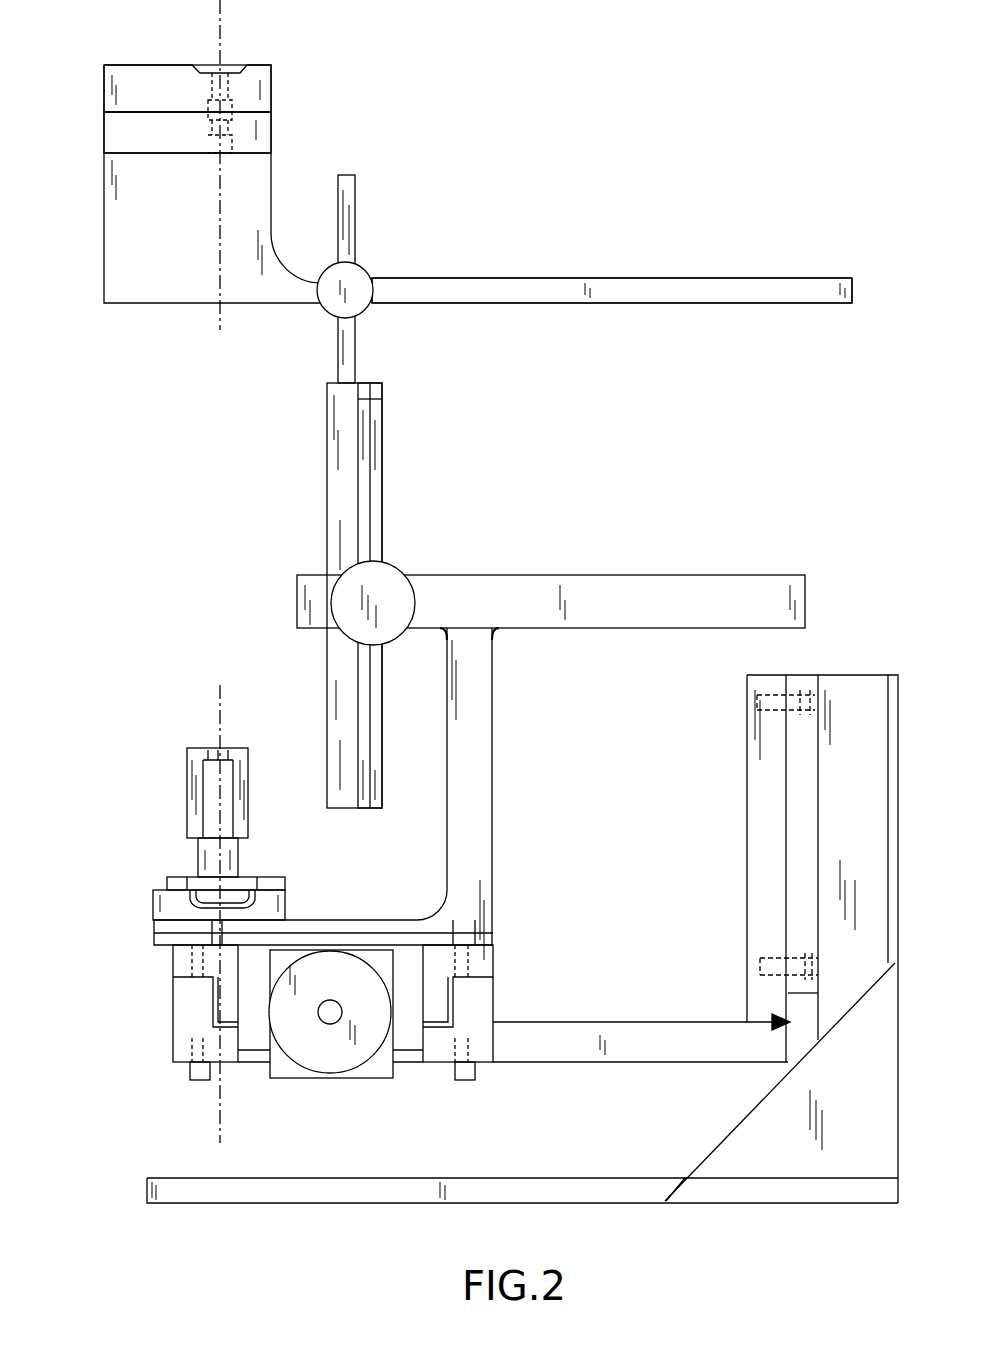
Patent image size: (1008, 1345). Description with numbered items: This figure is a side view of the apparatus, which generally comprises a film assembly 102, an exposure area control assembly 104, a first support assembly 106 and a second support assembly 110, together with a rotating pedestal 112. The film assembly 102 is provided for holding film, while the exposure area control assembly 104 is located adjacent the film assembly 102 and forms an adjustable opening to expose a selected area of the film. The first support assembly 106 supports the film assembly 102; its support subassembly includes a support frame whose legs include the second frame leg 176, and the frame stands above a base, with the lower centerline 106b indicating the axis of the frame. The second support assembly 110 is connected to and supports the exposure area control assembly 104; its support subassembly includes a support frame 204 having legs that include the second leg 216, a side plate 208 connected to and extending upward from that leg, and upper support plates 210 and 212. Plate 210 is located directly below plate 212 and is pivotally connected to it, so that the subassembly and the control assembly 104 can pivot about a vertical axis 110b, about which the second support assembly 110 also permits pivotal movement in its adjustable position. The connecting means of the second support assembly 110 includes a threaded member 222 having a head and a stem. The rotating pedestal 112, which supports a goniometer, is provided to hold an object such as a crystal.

The film assembly 102 is at (406, 467).
The exposure area control assembly 104 is at (306, 458).
The first support assembly 106 is at (612, 532).
The frame axis centerline 106b is at (222, 1113).
The second support assembly 110 is at (570, 236).
The second, vertical axis 110b is at (222, 44).
The rotating pedestal 112 is at (180, 792).
The second frame leg 176 is at (737, 580).
The support frame 204 is at (738, 277).
The side plate 208 is at (125, 212).
The upper support plate 210 is at (262, 124).
The upper support plate 212 is at (115, 88).
The second leg 216 is at (630, 297).
The threaded member 222 is at (356, 268).